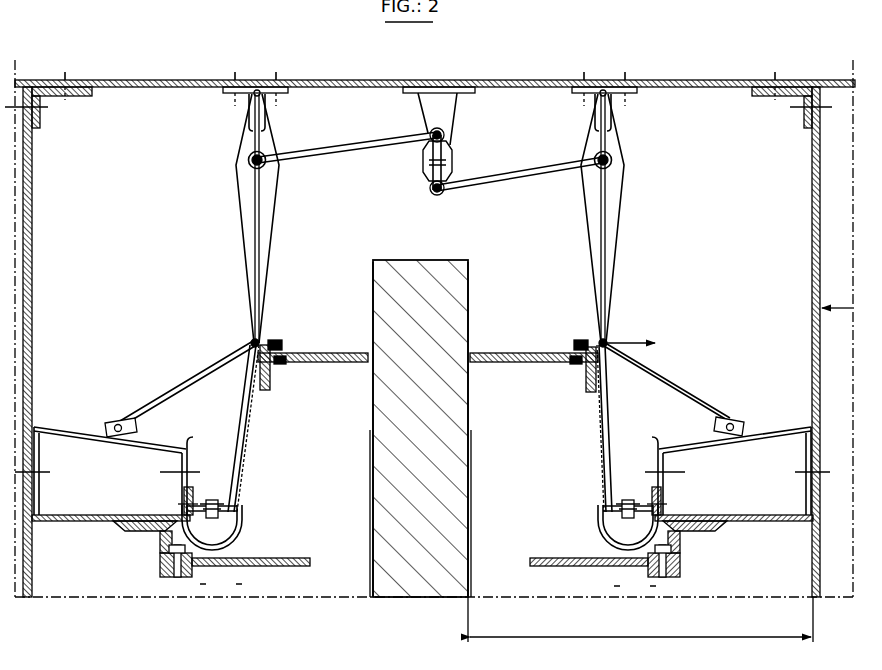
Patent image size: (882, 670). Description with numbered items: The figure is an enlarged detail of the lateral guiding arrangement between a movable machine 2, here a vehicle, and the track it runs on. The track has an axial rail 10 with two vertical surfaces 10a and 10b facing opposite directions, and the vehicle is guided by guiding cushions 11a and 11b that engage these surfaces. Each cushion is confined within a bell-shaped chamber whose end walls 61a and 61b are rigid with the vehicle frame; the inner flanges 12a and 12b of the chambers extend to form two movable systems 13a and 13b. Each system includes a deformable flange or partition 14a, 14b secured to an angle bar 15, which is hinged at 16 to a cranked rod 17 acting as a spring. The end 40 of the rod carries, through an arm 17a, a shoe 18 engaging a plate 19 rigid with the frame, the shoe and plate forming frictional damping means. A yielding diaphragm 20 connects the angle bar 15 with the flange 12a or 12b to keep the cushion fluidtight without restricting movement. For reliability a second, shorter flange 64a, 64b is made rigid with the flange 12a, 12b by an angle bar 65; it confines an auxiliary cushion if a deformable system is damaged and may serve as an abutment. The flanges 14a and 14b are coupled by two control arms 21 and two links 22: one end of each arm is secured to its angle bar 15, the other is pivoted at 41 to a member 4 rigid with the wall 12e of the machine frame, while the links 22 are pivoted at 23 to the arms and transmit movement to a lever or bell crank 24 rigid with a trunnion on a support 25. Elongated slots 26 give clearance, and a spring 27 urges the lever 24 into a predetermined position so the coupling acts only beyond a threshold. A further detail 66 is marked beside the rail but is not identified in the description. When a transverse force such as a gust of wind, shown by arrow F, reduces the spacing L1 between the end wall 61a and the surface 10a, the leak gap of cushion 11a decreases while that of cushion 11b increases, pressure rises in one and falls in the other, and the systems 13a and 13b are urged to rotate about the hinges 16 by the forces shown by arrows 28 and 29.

The movable machine 2 is at (146, 78).
The member 4 is at (280, 82).
The pivotal connection 41 is at (255, 86).
The wall 12e is at (696, 80).
The end wall 61a is at (818, 545).
The end wall 61b is at (32, 582).
The axial rail 10 is at (398, 272).
The vertical surface 10a is at (470, 300).
The vertical surface 10b is at (371, 300).
The guide slot 66 is at (371, 434).
The deformable flange 14a is at (500, 353).
The deformable flange 14b is at (322, 363).
The support 25 is at (448, 103).
The lever 24 is at (446, 147).
The elastic member 27 is at (452, 160).
The elongated slots 26 is at (430, 133).
The links 22 is at (340, 145).
The control arms 21 is at (248, 240).
The pivotal connection 23 is at (248, 160).
The arrow 29 is at (250, 343).
The end of rod 40 is at (602, 338).
The arrow 28 is at (629, 329).
The cranked rod 17 is at (243, 420).
The movable system 13a is at (588, 443).
The movable system 13b is at (256, 436).
The angle bar 15 is at (268, 390).
The arm 17a is at (178, 393).
The shoe 18 is at (112, 420).
The plate 19 is at (60, 440).
The yielding diaphragm 20 is at (236, 540).
The hinge 16 is at (230, 516).
The inner flange 12a is at (762, 522).
The inner flange 12b is at (146, 531).
The angle bar 65 is at (160, 560).
The second flange 64a is at (536, 567).
The second flange 64b is at (285, 568).
The guiding cushion 11a is at (635, 585).
The guiding cushion 11b is at (221, 583).
The force arrow F is at (843, 298).
The spacing L1 is at (640, 619).